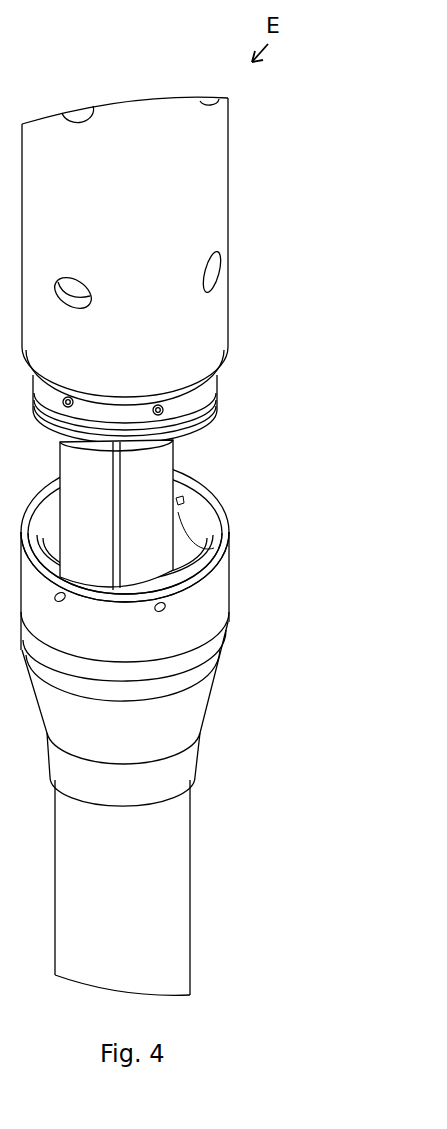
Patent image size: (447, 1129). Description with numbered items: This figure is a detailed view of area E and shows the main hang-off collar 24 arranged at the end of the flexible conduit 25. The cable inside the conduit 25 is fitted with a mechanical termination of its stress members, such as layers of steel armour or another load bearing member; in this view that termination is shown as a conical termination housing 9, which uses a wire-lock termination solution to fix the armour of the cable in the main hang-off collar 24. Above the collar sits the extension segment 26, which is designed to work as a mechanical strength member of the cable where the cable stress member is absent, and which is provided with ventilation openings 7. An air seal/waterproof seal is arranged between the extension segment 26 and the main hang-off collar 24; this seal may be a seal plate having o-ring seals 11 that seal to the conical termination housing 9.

The ventilation openings 7 is at (207, 274).
The conical termination housing 9 is at (207, 698).
The o-ring seals 11 is at (190, 545).
The main hang-off collar 24 is at (212, 625).
The flexible conduit 25 is at (190, 924).
The extension segment 26 is at (225, 224).